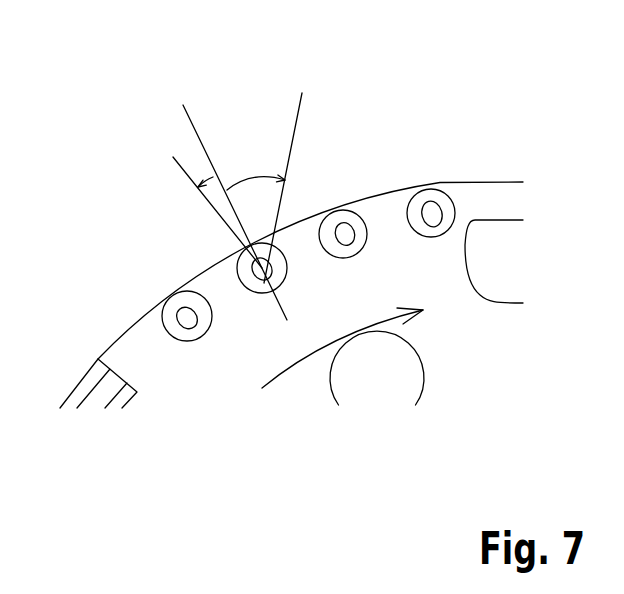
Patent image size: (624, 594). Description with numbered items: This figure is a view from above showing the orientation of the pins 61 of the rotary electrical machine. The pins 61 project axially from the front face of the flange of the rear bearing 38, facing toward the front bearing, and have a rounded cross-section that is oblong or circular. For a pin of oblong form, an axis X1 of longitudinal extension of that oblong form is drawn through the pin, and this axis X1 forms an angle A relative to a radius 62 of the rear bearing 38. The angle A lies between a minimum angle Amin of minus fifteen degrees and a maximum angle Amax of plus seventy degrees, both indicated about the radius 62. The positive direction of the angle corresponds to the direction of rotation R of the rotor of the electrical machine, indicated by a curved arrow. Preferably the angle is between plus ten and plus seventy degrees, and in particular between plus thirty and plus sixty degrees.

The rear bearing 38 is at (227, 359).
The axis of longitudinal extension X1 is at (187, 317).
The radius 62 is at (192, 117).
The pins 61 is at (345, 234).
The minimum angle Amin is at (199, 185).
The maximum angle Amax is at (252, 178).
The direction of rotation R is at (342, 326).